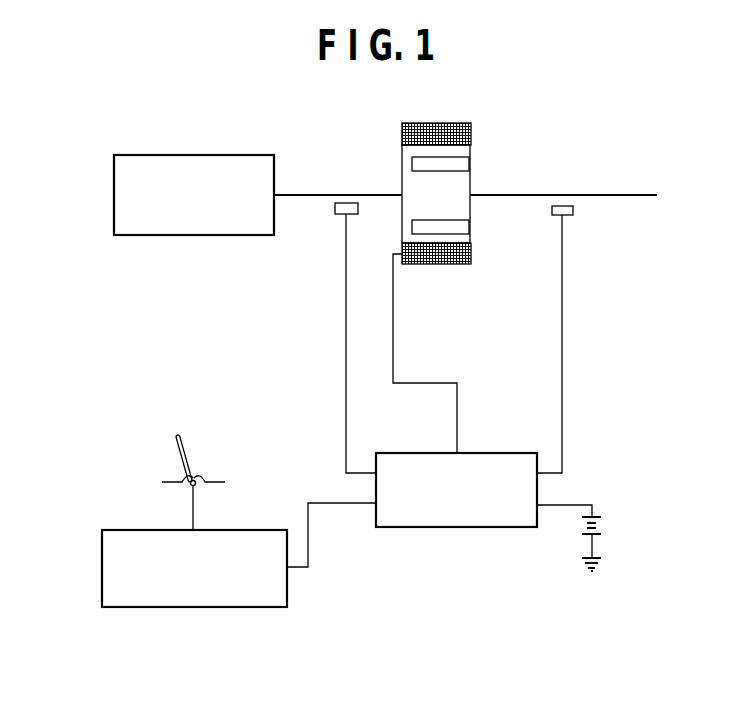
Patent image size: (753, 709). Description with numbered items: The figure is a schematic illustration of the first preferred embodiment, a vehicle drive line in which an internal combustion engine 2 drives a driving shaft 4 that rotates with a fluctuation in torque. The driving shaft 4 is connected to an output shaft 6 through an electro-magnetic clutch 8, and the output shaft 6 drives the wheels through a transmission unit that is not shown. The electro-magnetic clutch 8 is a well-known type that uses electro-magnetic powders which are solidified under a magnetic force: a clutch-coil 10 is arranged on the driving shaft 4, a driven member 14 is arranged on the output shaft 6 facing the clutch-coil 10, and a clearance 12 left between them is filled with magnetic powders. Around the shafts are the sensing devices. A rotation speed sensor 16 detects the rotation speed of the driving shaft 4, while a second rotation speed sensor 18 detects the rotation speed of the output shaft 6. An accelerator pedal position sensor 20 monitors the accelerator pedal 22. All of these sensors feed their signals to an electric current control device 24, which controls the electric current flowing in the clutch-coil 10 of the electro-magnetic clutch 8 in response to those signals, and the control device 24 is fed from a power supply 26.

The internal combustion engine 2 is at (215, 155).
The driving shaft 4 is at (350, 193).
The output shaft 6 is at (542, 194).
The electro-magnetic clutch 8 is at (436, 189).
The clutch-coil 10 is at (472, 130).
The clearance 12 is at (468, 150).
The driven member 14 is at (462, 162).
The rotation speed sensor 16 is at (337, 215).
The rotation speed sensor 18 is at (566, 216).
The accelerator pedal position sensor 20 is at (102, 578).
The accelerator pedal 22 is at (195, 450).
The electric current control device 24 is at (460, 520).
The power supply 26 is at (603, 530).